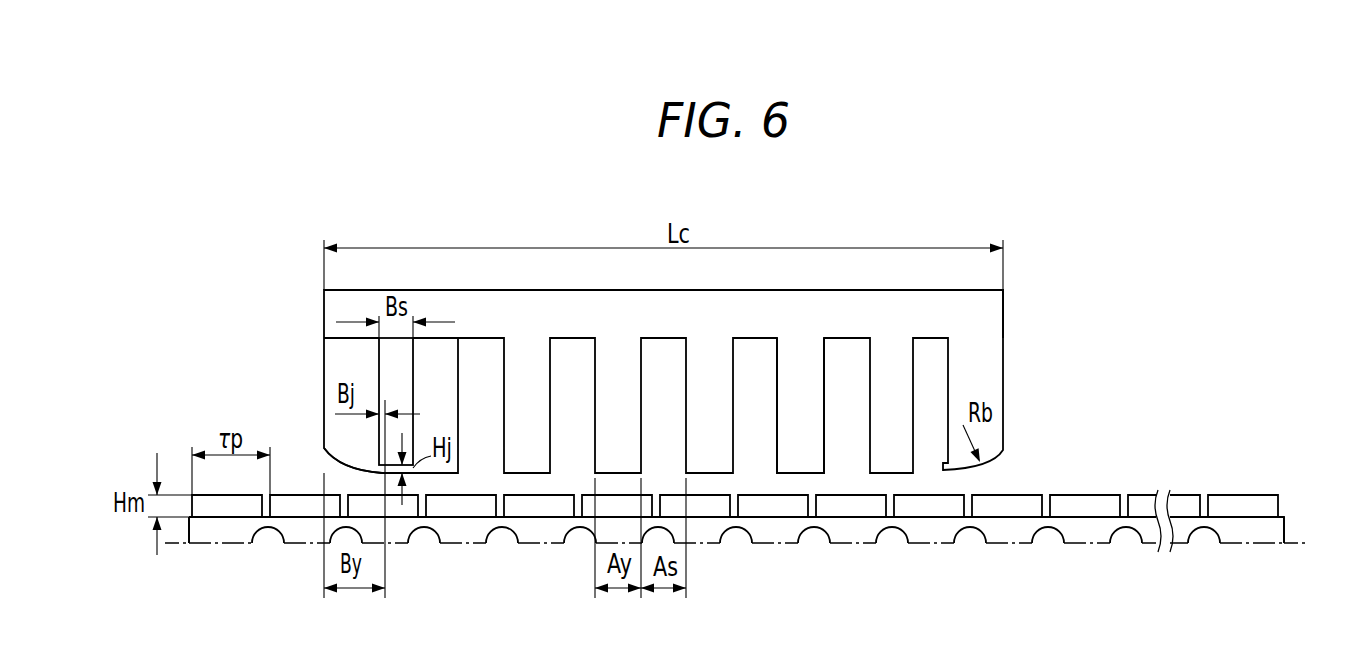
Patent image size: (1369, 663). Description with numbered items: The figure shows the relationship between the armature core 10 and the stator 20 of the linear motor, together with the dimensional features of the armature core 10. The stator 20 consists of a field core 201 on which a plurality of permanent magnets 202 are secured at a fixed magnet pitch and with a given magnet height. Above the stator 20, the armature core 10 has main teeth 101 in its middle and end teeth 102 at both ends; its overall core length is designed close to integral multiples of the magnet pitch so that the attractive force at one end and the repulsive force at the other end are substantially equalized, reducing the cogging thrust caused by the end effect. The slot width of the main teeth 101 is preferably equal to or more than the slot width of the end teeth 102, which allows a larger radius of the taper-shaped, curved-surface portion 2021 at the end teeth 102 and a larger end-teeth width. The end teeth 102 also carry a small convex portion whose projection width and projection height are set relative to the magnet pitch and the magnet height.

The armature core 10 is at (1008, 296).
The main teeth 101 is at (785, 395).
The end teeth 102 is at (990, 364).
The taper-shaped portion 2021 is at (323, 471).
The stator 20 is at (1292, 518).
The field core 201 is at (1250, 535).
The permanent magnets 202 is at (1243, 512).